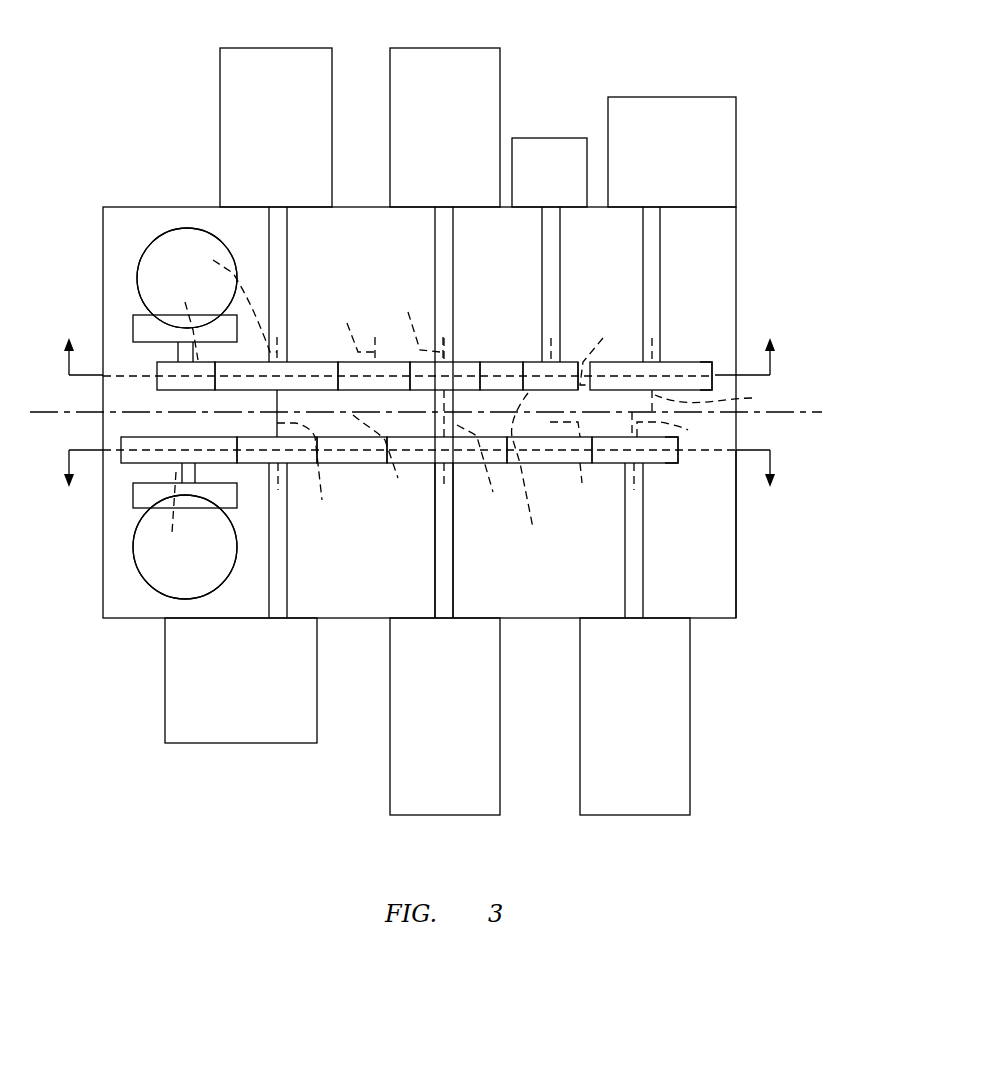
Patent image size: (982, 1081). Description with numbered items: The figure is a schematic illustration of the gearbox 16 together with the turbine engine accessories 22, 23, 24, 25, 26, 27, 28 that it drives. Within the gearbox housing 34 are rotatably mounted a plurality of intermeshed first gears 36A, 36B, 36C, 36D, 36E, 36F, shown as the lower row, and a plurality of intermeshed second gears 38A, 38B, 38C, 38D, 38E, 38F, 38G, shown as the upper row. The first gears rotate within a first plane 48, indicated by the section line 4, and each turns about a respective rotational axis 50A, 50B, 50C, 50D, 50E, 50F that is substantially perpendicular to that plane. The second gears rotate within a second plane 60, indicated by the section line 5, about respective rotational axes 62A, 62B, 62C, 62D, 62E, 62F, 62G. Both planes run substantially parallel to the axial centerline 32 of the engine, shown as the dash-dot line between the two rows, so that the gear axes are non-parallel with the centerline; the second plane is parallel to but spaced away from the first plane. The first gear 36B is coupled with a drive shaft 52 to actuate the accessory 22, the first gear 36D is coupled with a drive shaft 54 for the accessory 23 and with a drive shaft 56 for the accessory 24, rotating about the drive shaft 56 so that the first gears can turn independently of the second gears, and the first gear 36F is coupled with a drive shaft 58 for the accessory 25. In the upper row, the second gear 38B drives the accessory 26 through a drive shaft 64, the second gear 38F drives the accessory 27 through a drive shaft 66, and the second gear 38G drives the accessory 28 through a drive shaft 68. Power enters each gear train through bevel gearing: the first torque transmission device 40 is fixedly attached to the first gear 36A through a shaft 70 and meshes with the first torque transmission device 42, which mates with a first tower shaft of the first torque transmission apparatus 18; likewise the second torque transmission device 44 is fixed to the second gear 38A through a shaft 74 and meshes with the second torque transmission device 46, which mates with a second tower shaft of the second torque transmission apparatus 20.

The gearbox 16 is at (743, 267).
The first torque transmission apparatus 18 is at (122, 546).
The second torque transmission apparatus 20 is at (122, 287).
The turbine engine accessory 22 is at (224, 693).
The turbine engine accessory 23 is at (429, 721).
The turbine engine accessory 24 is at (426, 116).
The turbine engine accessory 25 is at (616, 726).
The turbine engine accessory 26 is at (259, 116).
The turbine engine accessory 27 is at (652, 138).
The turbine engine accessory 28 is at (532, 185).
The axial centerline 32 is at (796, 416).
The gearbox housing 34 is at (737, 553).
The first gear 36A is at (122, 440).
The first gear 36B is at (303, 465).
The first gear 36C is at (342, 465).
The first gear 36D is at (476, 465).
The first gear 36E is at (532, 465).
The first gear 36F is at (660, 464).
The second gear 38A is at (160, 391).
The second gear 38B is at (303, 362).
The second gear 38C is at (390, 362).
The second gear 38D is at (468, 362).
The second gear 38E is at (505, 362).
The second gear 38F is at (685, 362).
The second gear 38G is at (570, 362).
The first torque transmission device 40 is at (133, 496).
The first torque transmission device 42 is at (148, 586).
The second torque transmission device 44 is at (133, 329).
The second torque transmission device 46 is at (141, 252).
The first plane 48 is at (708, 452).
The rotational axis 50A is at (171, 517).
The rotational axis 50B is at (317, 475).
The rotational axis 50C is at (388, 460).
The rotational axis 50D is at (491, 477).
The rotational axis 50E is at (577, 467).
The rotational axis 50F is at (685, 433).
The drive shaft 52 is at (288, 585).
The drive shaft 54 is at (454, 585).
The drive shaft 56 is at (435, 255).
The drive shaft 58 is at (644, 590).
The second plane 60 is at (712, 375).
The rotational axis 62A is at (188, 315).
The rotational axis 62B is at (220, 299).
The rotational axis 62C is at (346, 329).
The rotational axis 62D is at (411, 324).
The rotational axis 62E is at (536, 478).
The rotational axis 62F is at (727, 401).
The rotational axis 62G is at (611, 347).
The drive shaft 64 is at (287, 253).
The drive shaft 66 is at (660, 265).
The drive shaft 68 is at (562, 262).
The shaft 70 is at (193, 472).
The shaft 74 is at (178, 355).
The section line 4- 4 is at (418, 467).
The section line 5- 5 is at (418, 360).